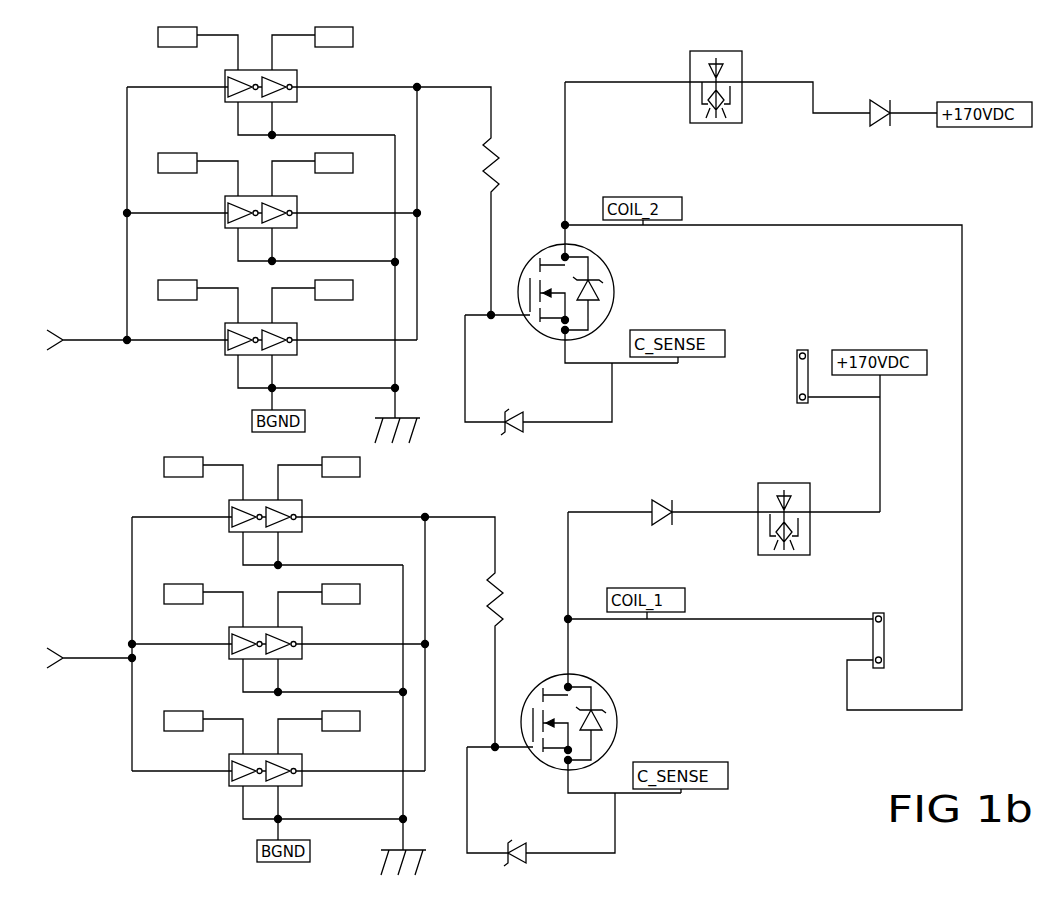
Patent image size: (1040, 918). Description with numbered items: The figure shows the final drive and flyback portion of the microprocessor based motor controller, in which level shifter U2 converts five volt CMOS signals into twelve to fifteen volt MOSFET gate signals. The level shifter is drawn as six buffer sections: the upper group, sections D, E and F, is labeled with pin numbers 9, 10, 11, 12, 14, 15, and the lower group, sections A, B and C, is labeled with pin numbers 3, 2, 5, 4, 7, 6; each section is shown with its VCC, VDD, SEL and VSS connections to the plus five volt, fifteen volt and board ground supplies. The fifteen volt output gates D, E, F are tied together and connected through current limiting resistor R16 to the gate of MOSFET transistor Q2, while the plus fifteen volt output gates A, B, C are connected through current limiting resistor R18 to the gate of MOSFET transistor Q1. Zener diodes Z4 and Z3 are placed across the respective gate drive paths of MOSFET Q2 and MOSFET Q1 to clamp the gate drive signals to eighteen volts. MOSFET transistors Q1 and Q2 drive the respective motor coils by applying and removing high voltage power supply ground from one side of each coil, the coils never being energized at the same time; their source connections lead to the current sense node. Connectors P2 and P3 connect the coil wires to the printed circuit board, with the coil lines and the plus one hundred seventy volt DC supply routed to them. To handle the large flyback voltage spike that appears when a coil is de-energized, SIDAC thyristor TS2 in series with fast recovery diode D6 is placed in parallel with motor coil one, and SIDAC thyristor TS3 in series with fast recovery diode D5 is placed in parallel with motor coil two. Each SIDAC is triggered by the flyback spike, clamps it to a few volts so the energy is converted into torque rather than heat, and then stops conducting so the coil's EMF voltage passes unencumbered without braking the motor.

The current limiting resistor R16 is at (458, 201).
The current limiting resistor R18 is at (464, 632).
The MOSFET transistor Q1 is at (583, 641).
The MOSFET transistor Q2 is at (580, 211).
The zener diode Z3 is at (513, 806).
The zener diode Z4 is at (511, 375).
The fast recovery diode D5 is at (903, 128).
The fast recovery diode D6 is at (766, 526).
The SIDAC thyristor TS2 is at (784, 533).
The SIDAC thyristor TS3 is at (716, 102).
The connector P2 is at (837, 389).
The connector P3 is at (875, 626).
The buffer U2:D input pin 9 is at (272, 83).
The buffer U2:D output pin 10 is at (293, 82).
The buffer U2:E input pin 11 is at (272, 209).
The buffer U2:E output pin 12 is at (293, 208).
The buffer U2:F input pin 14 is at (272, 336).
The buffer U2:F output pin 15 is at (293, 335).
The buffer U2:A input pin 3 is at (278, 513).
The buffer U2:A output pin 2 is at (294, 512).
The buffer U2:B input pin 5 is at (278, 640).
The buffer U2:B output pin 4 is at (294, 639).
The buffer U2:C input pin 7 is at (278, 767).
The buffer U2:C output pin 6 is at (294, 766).